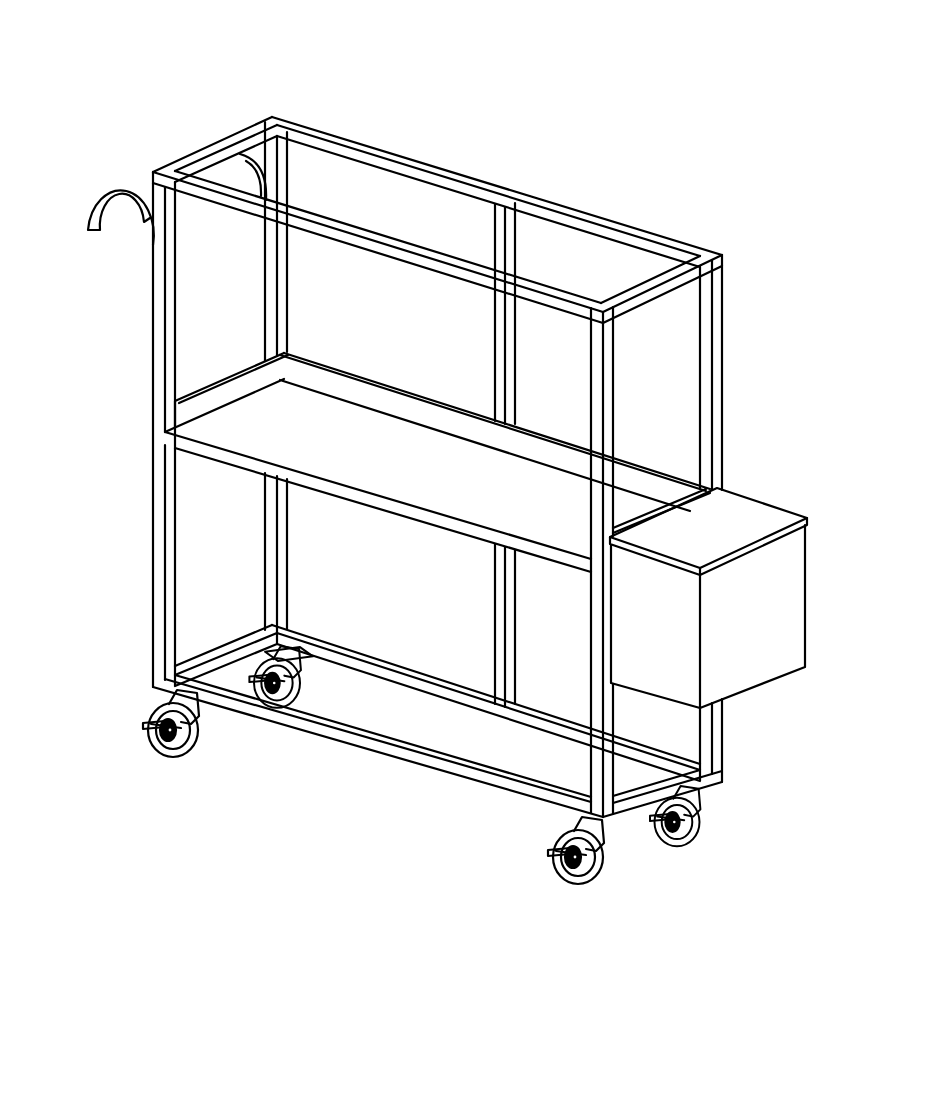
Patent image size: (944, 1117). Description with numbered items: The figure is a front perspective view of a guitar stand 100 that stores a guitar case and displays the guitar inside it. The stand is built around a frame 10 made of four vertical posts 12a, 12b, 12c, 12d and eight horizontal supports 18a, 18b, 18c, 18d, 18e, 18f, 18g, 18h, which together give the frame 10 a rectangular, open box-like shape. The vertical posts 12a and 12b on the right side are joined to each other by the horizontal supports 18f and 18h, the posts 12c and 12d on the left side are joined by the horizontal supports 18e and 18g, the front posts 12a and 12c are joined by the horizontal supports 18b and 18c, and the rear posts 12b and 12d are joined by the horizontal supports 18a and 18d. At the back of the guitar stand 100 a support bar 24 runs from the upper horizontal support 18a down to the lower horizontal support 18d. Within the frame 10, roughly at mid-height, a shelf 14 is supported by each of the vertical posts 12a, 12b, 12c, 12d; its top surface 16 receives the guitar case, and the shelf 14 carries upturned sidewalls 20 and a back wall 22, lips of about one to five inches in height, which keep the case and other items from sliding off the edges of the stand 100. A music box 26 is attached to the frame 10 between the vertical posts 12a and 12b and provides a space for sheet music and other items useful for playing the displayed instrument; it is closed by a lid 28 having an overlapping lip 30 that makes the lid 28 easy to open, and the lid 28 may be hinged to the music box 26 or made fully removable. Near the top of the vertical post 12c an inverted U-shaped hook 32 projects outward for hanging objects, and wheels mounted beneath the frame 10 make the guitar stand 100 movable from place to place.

The guitar stand 100 is at (221, 80).
The frame 10 is at (380, 115).
The vertical post 12a is at (612, 370).
The vertical post 12b is at (728, 306).
The vertical post 12c is at (150, 330).
The vertical post 12d is at (285, 160).
The shelf 14 is at (265, 453).
The top surface 16 is at (272, 458).
The horizontal support 18a is at (455, 178).
The horizontal support 18b is at (410, 247).
The horizontal support 18c is at (331, 740).
The horizontal support 18d is at (372, 656).
The horizontal support 18e is at (205, 150).
The horizontal support 18f is at (658, 278).
The horizontal support 18g is at (248, 632).
The horizontal support 18h is at (632, 808).
The sidewalls 20 is at (248, 380).
The back wall 22 is at (390, 395).
The support bar 24 is at (503, 230).
The music box 26 is at (796, 598).
The lid 28 is at (758, 506).
The overlapping lip 30 is at (803, 519).
The hook 32 is at (92, 205).